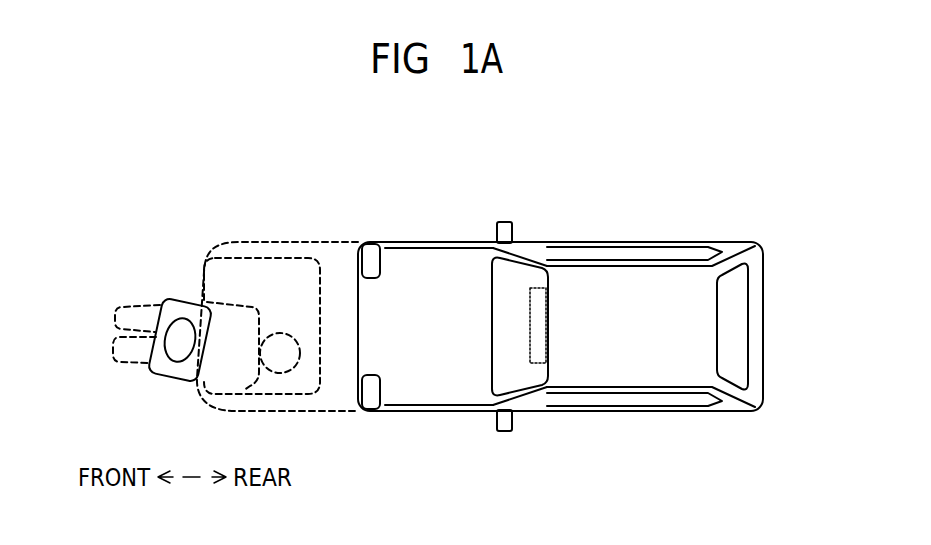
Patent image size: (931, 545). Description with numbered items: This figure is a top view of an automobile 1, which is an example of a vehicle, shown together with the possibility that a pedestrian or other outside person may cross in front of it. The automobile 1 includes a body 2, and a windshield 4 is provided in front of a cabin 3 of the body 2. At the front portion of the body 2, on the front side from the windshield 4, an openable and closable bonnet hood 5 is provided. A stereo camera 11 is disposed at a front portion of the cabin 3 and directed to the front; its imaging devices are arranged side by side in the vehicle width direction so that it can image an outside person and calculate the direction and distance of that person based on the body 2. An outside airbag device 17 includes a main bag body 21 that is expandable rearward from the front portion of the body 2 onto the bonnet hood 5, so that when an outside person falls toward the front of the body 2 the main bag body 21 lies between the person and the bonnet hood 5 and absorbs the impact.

The automobile 1 is at (587, 182).
The body 2 is at (473, 241).
The cabin 3 is at (665, 284).
The windshield 4 is at (518, 373).
The bonnet hood 5 is at (413, 279).
The stereo camera 11 is at (553, 378).
The outside airbag device 17 is at (258, 392).
The main bag body 21 is at (336, 414).